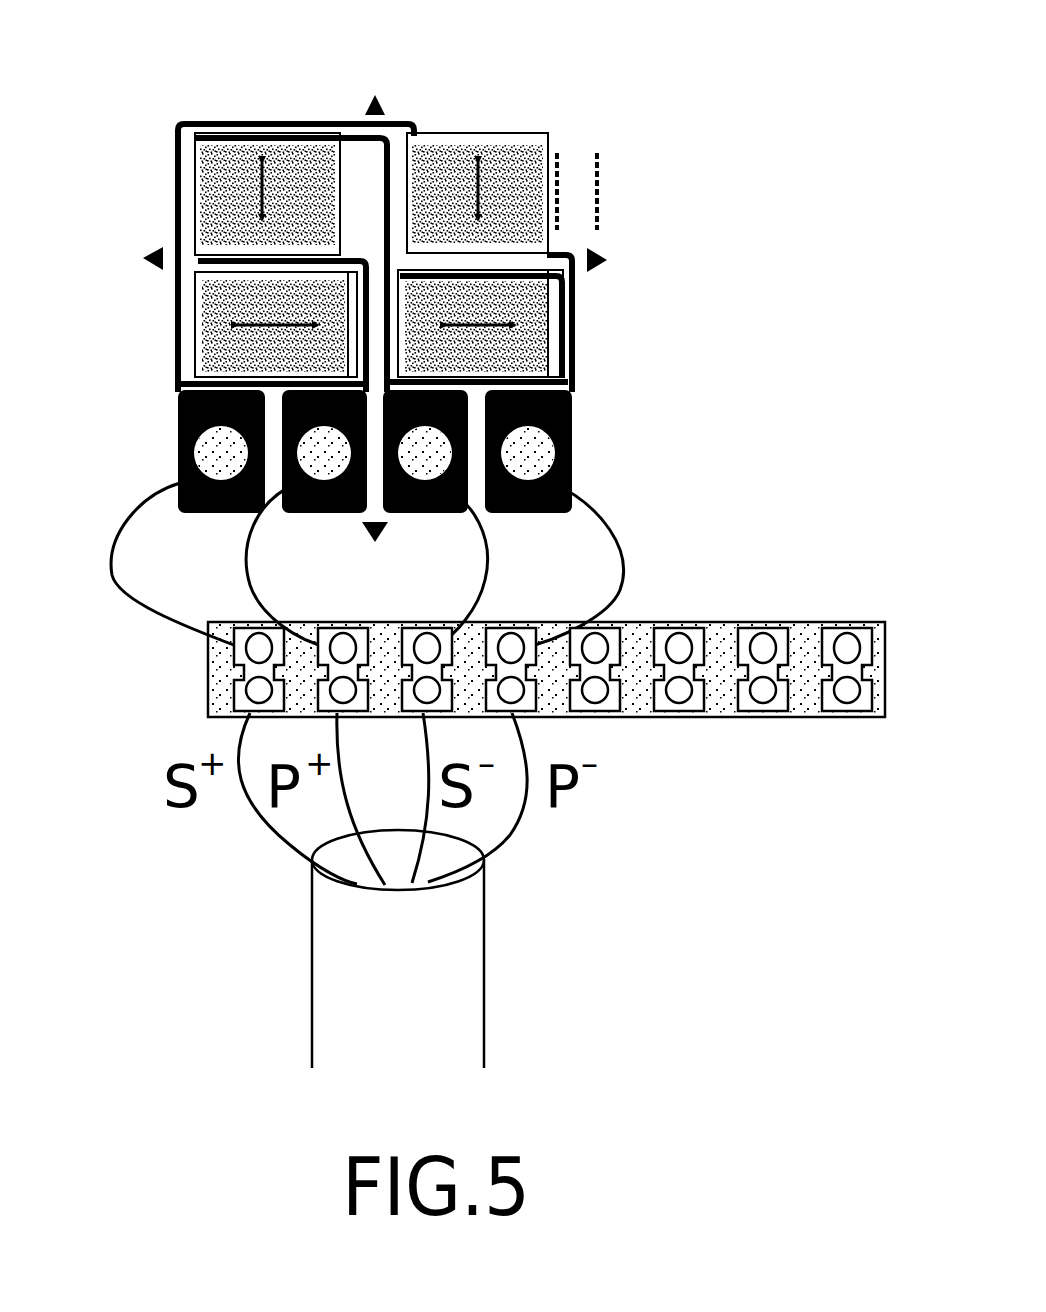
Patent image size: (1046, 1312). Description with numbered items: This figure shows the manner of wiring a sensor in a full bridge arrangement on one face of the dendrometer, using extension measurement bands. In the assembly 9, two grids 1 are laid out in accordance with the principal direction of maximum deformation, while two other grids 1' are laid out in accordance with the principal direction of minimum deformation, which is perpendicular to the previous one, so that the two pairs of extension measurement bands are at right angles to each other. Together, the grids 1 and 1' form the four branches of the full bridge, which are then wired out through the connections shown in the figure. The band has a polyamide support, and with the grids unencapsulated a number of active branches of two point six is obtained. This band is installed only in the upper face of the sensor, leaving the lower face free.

The grid 1 is at (371, 133).
The grid 1' is at (380, 323).
The assembly 9 is at (622, 255).